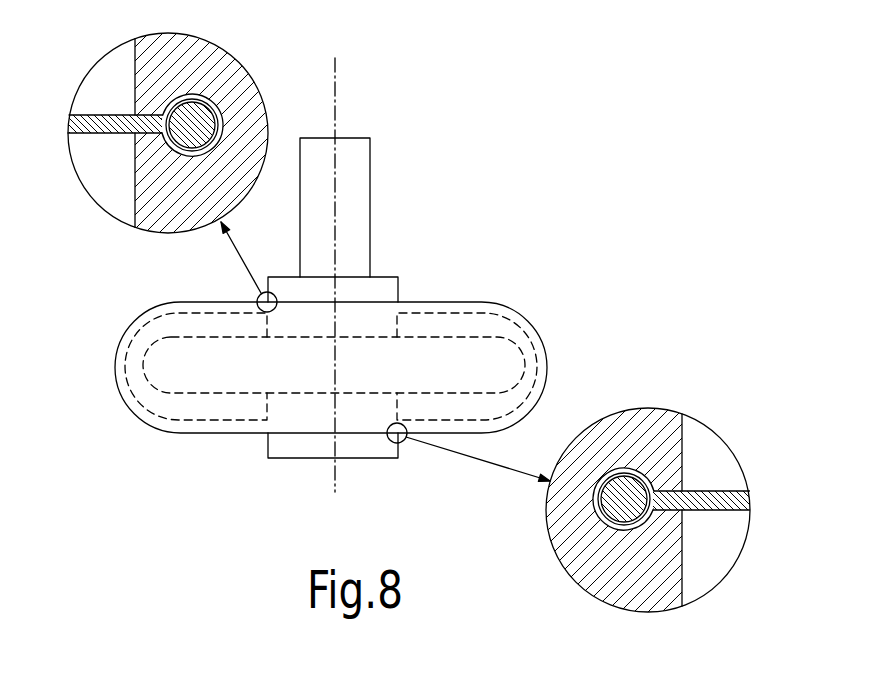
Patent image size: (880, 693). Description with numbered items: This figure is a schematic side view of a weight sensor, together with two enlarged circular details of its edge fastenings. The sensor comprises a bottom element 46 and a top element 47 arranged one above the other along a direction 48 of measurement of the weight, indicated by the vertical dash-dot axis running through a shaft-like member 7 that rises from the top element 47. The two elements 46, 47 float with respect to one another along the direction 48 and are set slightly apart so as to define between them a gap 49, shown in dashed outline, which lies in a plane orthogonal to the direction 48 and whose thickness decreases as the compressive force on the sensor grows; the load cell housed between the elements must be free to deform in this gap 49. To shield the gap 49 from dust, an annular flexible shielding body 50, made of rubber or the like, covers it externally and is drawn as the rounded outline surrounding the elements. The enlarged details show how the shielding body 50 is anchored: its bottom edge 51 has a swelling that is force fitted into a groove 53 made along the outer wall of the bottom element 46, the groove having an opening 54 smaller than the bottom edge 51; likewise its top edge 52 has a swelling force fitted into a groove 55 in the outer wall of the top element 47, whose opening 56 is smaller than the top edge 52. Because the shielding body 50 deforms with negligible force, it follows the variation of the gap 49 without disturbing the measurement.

The shaft 7 is at (357, 187).
The bottom element 46 is at (303, 450).
The top element 47 is at (388, 285).
The direction of measurement of the weight 48 is at (337, 101).
The gap 49 is at (197, 370).
The flexible shielding body 50 is at (115, 360).
The bottom edge 51 is at (612, 500).
The top edge 52 is at (200, 106).
The groove 53 is at (625, 476).
The opening 54 is at (688, 521).
The groove 55 is at (184, 156).
The opening 56 is at (120, 107).